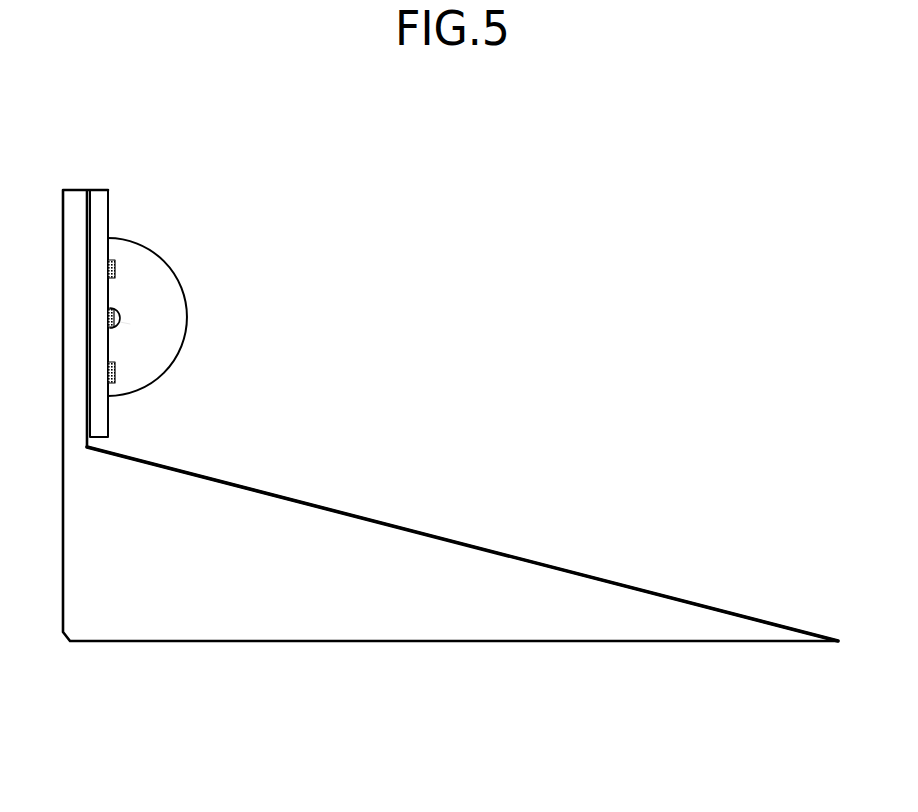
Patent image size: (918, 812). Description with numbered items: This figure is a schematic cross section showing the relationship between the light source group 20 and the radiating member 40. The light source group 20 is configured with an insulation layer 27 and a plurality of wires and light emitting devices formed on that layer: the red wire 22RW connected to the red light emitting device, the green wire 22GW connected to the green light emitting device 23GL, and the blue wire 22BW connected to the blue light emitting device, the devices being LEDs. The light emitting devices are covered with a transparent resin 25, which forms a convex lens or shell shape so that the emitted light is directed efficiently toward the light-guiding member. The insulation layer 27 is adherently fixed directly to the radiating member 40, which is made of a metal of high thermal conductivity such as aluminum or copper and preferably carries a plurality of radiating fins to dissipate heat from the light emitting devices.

The light source group 20 is at (178, 192).
The insulation layer 27 is at (109, 196).
The red wire 22RW is at (115, 268).
The green light emitting device 23GL is at (120, 314).
The green wire 22GW is at (120, 321).
The blue wire 22BW is at (115, 377).
The transparent resin 25 is at (185, 352).
The radiating member 40 is at (341, 512).